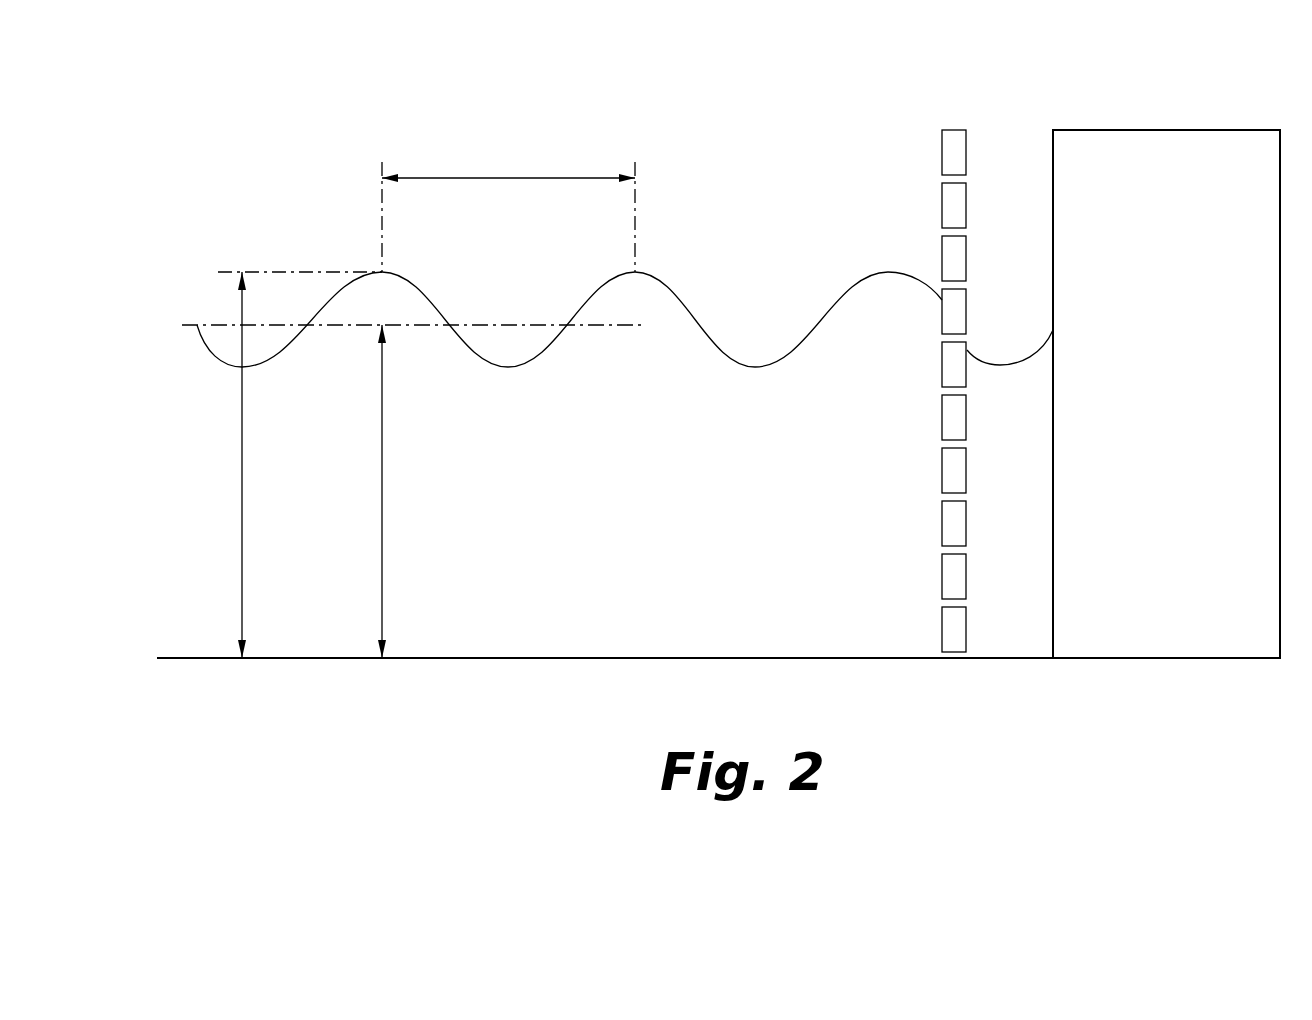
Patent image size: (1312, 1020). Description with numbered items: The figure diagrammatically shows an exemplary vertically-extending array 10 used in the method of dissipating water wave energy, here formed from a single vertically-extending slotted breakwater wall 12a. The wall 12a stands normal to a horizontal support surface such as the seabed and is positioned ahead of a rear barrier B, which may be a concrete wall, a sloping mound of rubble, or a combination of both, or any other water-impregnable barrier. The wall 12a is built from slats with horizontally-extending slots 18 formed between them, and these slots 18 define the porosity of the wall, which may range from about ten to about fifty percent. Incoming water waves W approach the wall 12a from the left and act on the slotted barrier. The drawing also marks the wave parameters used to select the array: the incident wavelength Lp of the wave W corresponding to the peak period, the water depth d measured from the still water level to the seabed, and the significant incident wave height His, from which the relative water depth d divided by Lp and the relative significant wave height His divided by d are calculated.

The array of slotted vertical walls 10 is at (850, 90).
The vertically-extending slotted breakwater wall 12a is at (897, 337).
The horizontally-extending slots 18 is at (922, 178).
The rear barrier B is at (1196, 90).
The water waves W is at (697, 195).
The incident wavelength Lp is at (413, 233).
The significant incident wave height His is at (258, 465).
The water depth d is at (394, 491).